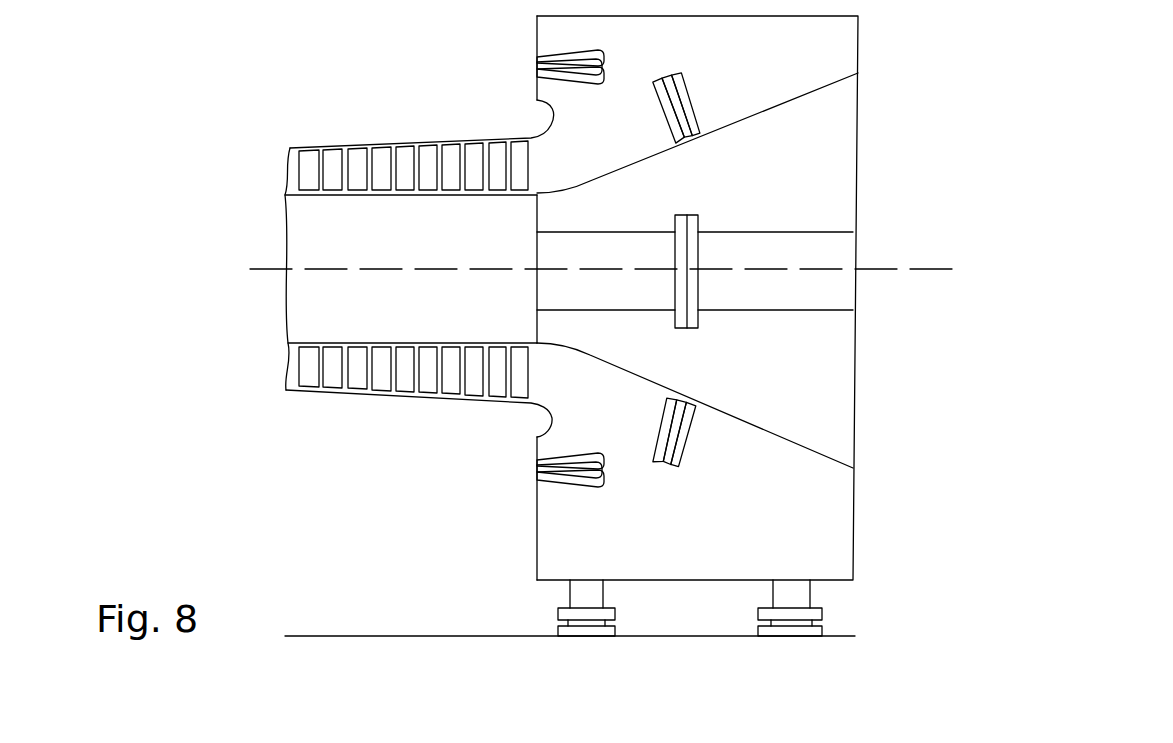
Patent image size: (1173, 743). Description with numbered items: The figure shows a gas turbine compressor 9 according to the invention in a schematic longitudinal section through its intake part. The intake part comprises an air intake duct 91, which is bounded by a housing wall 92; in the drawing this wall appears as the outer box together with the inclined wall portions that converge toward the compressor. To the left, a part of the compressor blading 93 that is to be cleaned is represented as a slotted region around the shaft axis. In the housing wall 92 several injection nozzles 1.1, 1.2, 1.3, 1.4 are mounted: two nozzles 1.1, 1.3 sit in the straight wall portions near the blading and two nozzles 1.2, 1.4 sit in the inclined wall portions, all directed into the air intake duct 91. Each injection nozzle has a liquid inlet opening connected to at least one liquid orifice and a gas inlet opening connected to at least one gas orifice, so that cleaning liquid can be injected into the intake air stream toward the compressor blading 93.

The gas turbine compressor 9 is at (200, 472).
The air intake duct 91 is at (769, 73).
The housing wall 92 is at (537, 27).
The compressor blading 93 is at (351, 118).
The injection nozzle 1.1 is at (524, 65).
The injection nozzle 1.2 is at (698, 152).
The injection nozzle 1.3 is at (524, 470).
The injection nozzle 1.4 is at (695, 391).